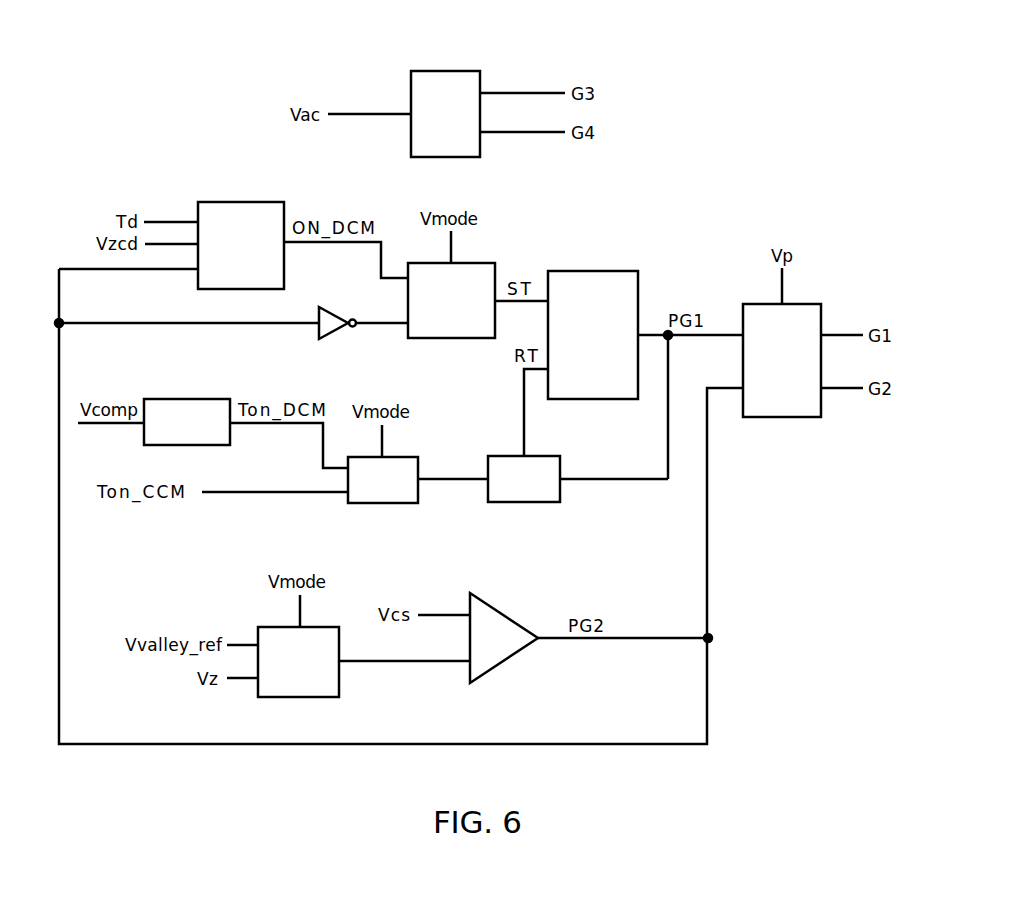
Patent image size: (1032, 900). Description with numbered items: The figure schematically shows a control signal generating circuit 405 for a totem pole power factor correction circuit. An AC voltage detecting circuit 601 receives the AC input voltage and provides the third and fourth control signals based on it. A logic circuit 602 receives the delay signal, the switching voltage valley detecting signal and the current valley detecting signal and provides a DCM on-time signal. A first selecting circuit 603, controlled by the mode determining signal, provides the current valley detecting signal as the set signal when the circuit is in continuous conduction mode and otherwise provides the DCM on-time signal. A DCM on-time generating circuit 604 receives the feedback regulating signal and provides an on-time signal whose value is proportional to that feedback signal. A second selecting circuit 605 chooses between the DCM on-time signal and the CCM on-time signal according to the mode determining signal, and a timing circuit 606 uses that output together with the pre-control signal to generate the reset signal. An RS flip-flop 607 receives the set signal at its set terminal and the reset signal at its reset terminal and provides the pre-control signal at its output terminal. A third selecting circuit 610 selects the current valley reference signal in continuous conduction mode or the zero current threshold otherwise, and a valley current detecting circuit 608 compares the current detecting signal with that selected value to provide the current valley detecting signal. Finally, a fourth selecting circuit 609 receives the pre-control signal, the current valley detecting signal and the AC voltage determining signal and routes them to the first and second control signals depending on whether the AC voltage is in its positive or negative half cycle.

The control signal generating circuit 405 is at (781, 63).
The AC voltage detecting circuit 601 is at (445, 114).
The logic circuit 602 is at (241, 245).
The first selecting circuit 603 is at (451, 300).
The DCM on-time generating circuit 604 is at (187, 422).
The second selecting circuit 605 is at (383, 480).
The timing circuit 606 is at (524, 479).
The RS flip-flop 607 is at (582, 271).
The valley current detecting circuit 608 is at (504, 638).
The fourth selecting circuit 609 is at (782, 360).
The third selecting circuit 610 is at (298, 662).